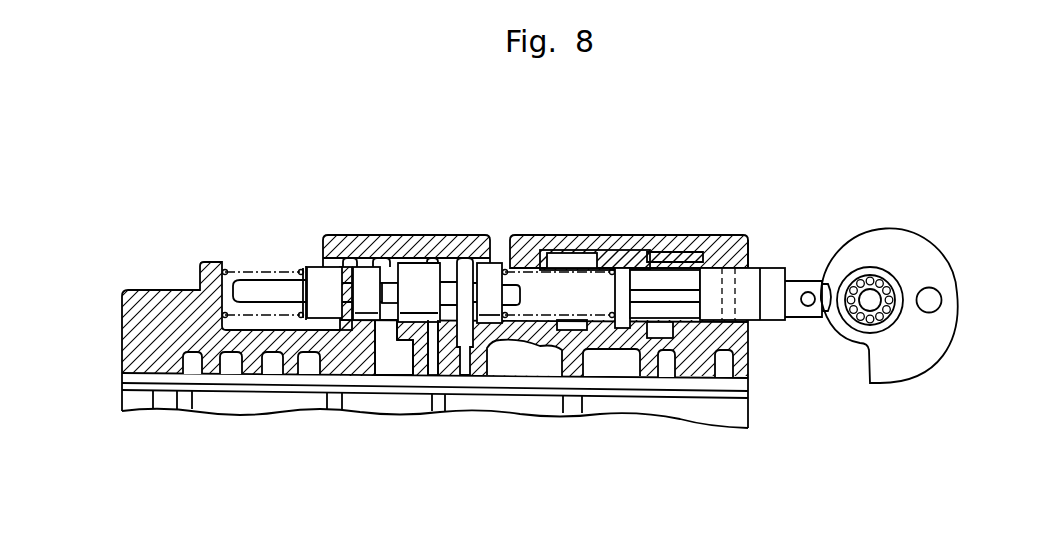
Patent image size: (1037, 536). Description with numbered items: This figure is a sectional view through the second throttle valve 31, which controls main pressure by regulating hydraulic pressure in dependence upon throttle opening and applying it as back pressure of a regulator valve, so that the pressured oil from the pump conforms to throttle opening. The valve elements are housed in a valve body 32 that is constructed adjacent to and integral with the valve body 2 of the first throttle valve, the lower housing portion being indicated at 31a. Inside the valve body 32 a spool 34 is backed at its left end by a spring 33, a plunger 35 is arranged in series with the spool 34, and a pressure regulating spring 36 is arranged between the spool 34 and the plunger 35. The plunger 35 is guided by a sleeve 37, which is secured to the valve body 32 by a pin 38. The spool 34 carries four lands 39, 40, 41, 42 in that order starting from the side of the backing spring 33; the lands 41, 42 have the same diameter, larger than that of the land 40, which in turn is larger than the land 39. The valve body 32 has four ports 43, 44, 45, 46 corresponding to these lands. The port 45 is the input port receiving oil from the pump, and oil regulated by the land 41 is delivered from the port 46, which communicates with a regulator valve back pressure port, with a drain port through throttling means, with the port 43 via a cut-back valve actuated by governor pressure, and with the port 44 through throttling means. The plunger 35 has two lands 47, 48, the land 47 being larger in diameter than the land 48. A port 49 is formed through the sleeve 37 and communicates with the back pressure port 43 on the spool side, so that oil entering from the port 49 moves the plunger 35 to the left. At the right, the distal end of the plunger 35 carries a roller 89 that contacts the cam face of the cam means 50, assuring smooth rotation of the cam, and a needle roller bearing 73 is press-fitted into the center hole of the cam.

The valve body 2 is at (466, 226).
The second throttle valve 31 is at (377, 230).
The housing lower body 31a is at (697, 333).
The valve body 32 is at (422, 262).
The spring 33 is at (243, 272).
The spool 34 is at (387, 292).
The plunger 35 is at (665, 290).
The pressure regulating spring 36 is at (585, 322).
The sleeve 37 is at (617, 253).
The pin 38 is at (748, 335).
The land 39 is at (320, 268).
The land 40 is at (365, 313).
The land 41 is at (420, 314).
The land 42 is at (495, 262).
The port 43 is at (345, 322).
The port 44 is at (386, 367).
The input port 45 is at (433, 367).
The port 46 is at (467, 360).
The land 47 is at (618, 329).
The land 48 is at (753, 313).
The port 49 is at (660, 338).
The cam means 50 is at (912, 222).
The needle roller bearing 73 is at (890, 291).
The roller 89 is at (829, 312).